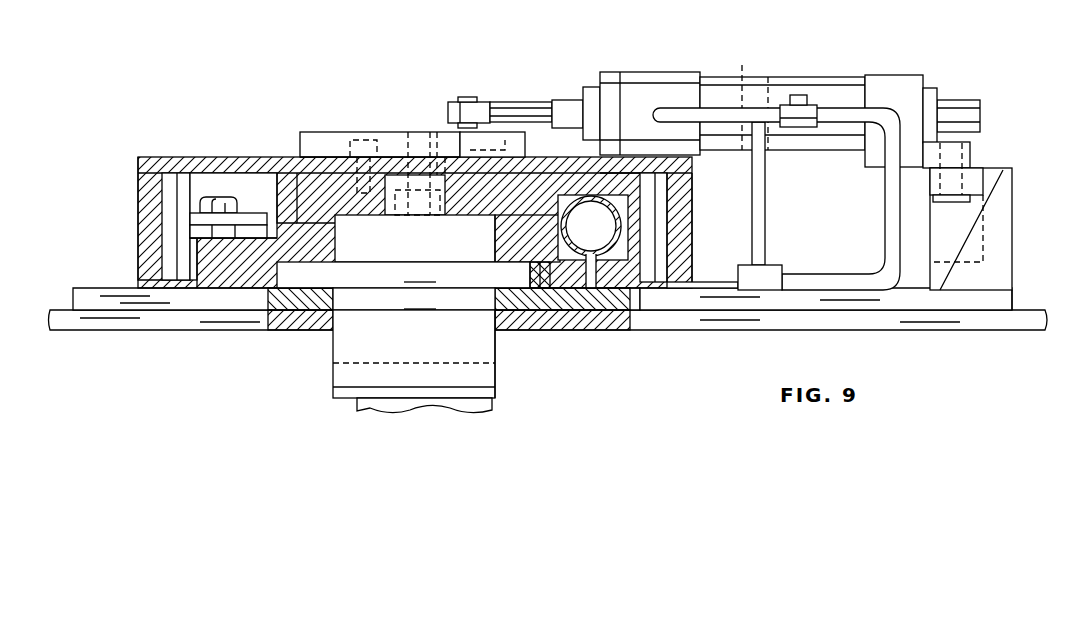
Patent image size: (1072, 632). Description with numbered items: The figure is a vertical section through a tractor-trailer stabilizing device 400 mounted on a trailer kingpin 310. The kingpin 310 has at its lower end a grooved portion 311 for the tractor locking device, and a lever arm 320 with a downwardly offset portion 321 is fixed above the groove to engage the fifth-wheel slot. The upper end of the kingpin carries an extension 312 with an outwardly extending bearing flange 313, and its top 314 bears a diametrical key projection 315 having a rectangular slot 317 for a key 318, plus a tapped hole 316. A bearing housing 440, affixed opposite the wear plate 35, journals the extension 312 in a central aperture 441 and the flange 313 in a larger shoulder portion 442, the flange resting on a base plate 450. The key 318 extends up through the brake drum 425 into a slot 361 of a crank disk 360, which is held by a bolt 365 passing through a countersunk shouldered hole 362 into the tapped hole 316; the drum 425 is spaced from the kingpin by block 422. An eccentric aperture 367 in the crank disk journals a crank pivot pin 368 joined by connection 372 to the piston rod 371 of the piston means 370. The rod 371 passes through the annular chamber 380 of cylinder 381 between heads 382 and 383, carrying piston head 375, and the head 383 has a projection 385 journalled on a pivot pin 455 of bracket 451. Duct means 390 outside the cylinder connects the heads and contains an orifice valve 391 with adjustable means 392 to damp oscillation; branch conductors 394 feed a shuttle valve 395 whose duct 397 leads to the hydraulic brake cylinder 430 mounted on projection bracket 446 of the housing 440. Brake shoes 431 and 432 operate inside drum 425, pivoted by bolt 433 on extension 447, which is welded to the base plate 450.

The wear plate 35 is at (943, 327).
The kingpin 310 is at (500, 354).
The grooved portion 311 is at (470, 400).
The extension 312 is at (414, 299).
The bearing flange 313 is at (413, 274).
The top of kingpin 314 is at (470, 213).
The diametrical key projection 315 is at (395, 193).
The tapped hole 316 is at (360, 205).
The rectangular slot 317 is at (408, 217).
The key 318 is at (418, 132).
The lever arm 320 is at (333, 355).
The offset portion 321 is at (343, 377).
The crank disk 360 is at (300, 143).
The slot in crank disk 361 is at (437, 133).
The countersunk shouldered hole 362 is at (342, 152).
The bolt 365 is at (363, 133).
The aperture 367 is at (527, 143).
The crank pivot pin 368 is at (467, 100).
The piston means 370 is at (740, 81).
The piston rod 371 is at (540, 108).
The connection 372 is at (450, 104).
The piston head 375 is at (763, 92).
The annular chamber 380 is at (820, 89).
The cylinder 381 is at (713, 90).
The cylinder head 382 is at (638, 83).
The cylinder head 383 is at (908, 87).
The projection 385 is at (973, 152).
The duct means 390 is at (856, 102).
The orifice valve 391 is at (798, 124).
The adjustable means 392 is at (800, 95).
The branch conductor 394 is at (766, 223).
The shuttle valve 395 is at (773, 270).
The duct 397 is at (702, 287).
The stabilizing device 400 is at (740, 62).
The spacer block 422 is at (553, 188).
The brake drum 425 is at (164, 155).
The hydraulic brake cylinder 430 is at (613, 193).
The brake shoe 431 is at (265, 210).
The brake shoe 432 is at (230, 290).
The bolt 433 is at (222, 203).
The bearing housing 440 is at (570, 293).
The central aperture 441 is at (485, 243).
The shoulder portion 442 is at (252, 232).
The projection bracket 446 is at (615, 262).
The extension of housing 447 is at (228, 288).
The base plate 450 is at (1000, 305).
The bracket 451 is at (1000, 230).
The pivot pin 455 is at (957, 207).